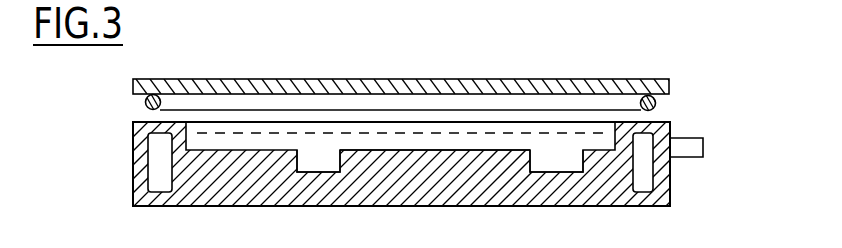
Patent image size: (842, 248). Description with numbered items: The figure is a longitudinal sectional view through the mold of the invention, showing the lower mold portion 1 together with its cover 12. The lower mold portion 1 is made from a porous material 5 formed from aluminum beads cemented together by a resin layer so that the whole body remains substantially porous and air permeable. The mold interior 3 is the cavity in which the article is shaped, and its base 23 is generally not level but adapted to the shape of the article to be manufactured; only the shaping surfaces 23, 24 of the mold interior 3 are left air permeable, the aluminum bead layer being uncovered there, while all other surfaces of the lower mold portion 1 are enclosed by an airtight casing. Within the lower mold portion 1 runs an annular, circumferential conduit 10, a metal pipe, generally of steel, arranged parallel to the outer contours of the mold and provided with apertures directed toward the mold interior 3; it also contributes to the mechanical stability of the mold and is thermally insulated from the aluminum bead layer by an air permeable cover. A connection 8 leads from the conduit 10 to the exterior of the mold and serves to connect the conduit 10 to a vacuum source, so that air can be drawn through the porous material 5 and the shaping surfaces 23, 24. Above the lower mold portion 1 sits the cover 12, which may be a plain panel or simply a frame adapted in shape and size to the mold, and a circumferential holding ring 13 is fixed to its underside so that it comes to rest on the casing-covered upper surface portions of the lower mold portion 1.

The lower mold portion 1 is at (118, 154).
The mold interior 3 is at (328, 167).
The porous material 5 is at (457, 175).
The connection 8 is at (693, 148).
The conduit 10 is at (132, 177).
The cover 12 is at (428, 83).
The holding ring 13 is at (658, 103).
The base of the mold interior 23 is at (393, 150).
The shaping surface 24 is at (188, 135).